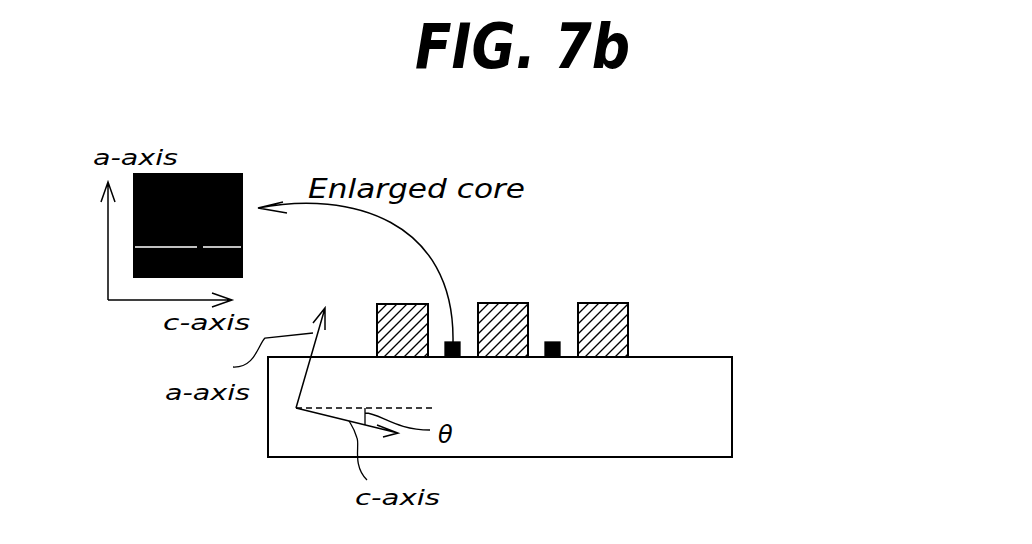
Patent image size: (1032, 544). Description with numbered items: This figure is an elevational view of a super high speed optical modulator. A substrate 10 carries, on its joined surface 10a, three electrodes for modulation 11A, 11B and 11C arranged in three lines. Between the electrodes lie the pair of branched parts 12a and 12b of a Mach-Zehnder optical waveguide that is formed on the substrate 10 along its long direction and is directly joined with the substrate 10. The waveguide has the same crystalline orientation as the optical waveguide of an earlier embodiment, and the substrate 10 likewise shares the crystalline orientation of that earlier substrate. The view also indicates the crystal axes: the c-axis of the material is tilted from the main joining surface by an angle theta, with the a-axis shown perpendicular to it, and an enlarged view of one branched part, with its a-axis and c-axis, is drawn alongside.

The substrate 10 is at (702, 412).
The joined surface 10a is at (680, 357).
The electrode for modulation 11A is at (384, 304).
The electrode for modulation 11B is at (511, 303).
The electrode for modulation 11C is at (630, 305).
The branched part 12a is at (452, 342).
The branched part 12b is at (556, 342).